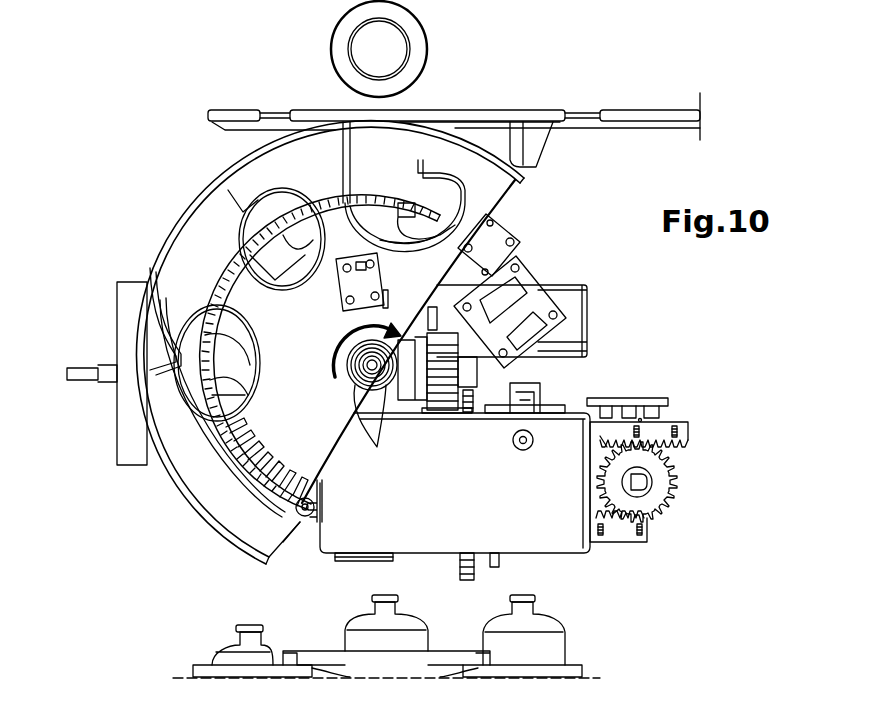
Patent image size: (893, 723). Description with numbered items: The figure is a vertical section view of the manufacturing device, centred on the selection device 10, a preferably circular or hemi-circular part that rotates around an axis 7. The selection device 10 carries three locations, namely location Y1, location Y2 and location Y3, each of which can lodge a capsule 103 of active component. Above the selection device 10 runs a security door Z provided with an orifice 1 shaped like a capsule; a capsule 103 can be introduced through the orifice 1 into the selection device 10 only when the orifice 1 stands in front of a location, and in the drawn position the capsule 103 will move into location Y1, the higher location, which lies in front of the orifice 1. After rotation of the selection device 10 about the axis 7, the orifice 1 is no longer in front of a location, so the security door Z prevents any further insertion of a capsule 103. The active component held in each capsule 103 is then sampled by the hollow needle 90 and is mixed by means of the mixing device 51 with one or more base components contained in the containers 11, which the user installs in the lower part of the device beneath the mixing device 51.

The orifice 1 is at (450, 104).
The capsule 103 is at (322, 21).
The security door Z is at (624, 90).
The location Y1 is at (383, 170).
The location Y2 is at (222, 218).
The location Y3 is at (216, 336).
The axis 7 is at (357, 398).
The selection device 10 is at (297, 428).
The hollow needle 90 is at (526, 450).
The mixing device 51 is at (483, 497).
The containers 11 is at (360, 636).